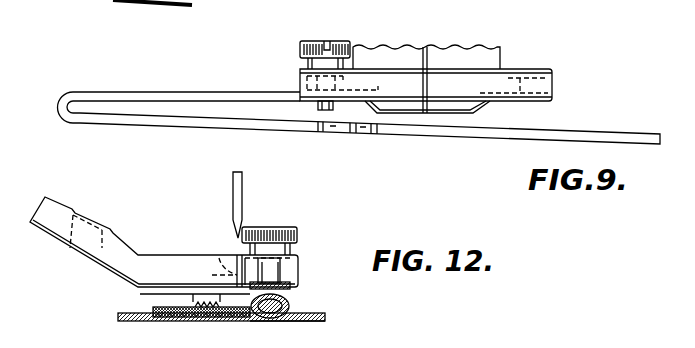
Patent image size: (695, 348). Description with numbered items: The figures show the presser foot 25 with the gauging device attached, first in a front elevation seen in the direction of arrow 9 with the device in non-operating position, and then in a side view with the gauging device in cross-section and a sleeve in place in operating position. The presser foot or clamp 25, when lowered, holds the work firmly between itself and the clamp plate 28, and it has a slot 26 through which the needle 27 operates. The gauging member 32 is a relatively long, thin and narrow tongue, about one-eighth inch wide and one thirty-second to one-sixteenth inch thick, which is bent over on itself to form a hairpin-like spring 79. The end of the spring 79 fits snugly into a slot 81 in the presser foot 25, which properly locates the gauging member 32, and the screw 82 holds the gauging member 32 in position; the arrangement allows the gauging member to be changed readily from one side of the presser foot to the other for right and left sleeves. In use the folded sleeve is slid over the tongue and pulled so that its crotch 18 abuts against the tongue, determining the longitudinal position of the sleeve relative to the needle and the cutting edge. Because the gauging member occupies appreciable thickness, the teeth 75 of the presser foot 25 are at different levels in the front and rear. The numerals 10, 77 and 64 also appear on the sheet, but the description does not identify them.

In FIG. 9, the clamping assembly 10 is at (133, 80).
In FIG. 9, the hairpin-like spring 79 is at (217, 92).
In FIG. 9, the gauging member 32 is at (470, 137).
In FIG. 12, the gauging member 32 is at (268, 318).
In FIG. 9, the pin 77 is at (345, 130).
In FIG. 9, the presser foot 25 is at (468, 70).
In FIG. 12, the presser foot 25 is at (160, 254).
In FIG. 9, the teeth of the presser foot 75 is at (500, 112).
In FIG. 12, the teeth of the presser foot 75 is at (193, 296).
In FIG. 9, the slot 81 is at (553, 93).
In FIG. 9, the arrow 9 is at (428, 22).
In FIG. 12, the screw 82 is at (297, 233).
In FIG. 12, the needle 27 is at (233, 186).
In FIG. 12, the slot 26 is at (222, 253).
In FIG. 12, the crotch 18 is at (293, 306).
In FIG. 12, the clamp plate 28 is at (292, 322).
In FIG. 12, the adjacent figure element 64 is at (653, 333).